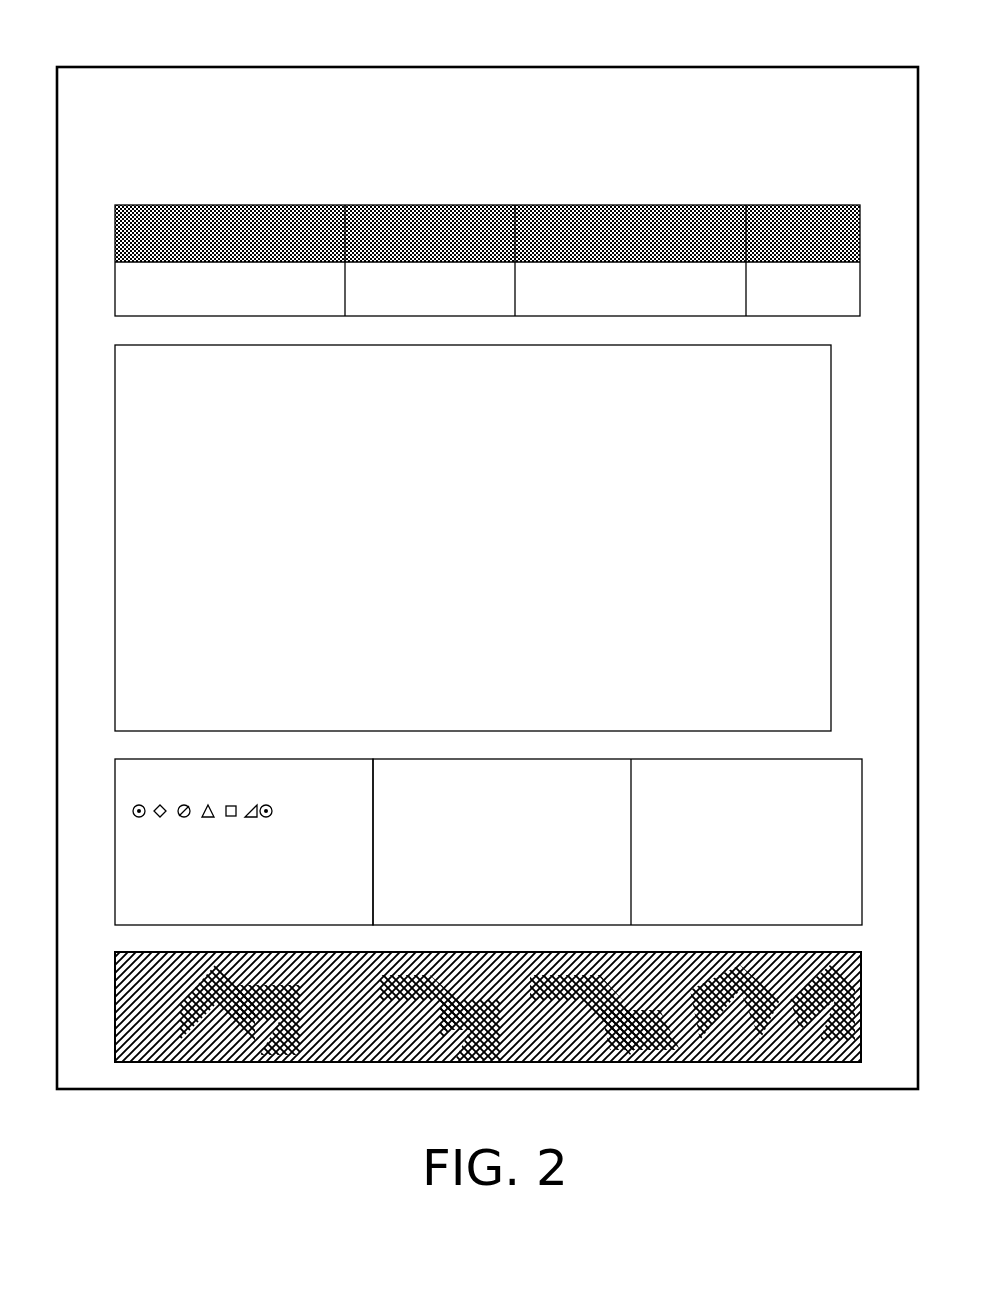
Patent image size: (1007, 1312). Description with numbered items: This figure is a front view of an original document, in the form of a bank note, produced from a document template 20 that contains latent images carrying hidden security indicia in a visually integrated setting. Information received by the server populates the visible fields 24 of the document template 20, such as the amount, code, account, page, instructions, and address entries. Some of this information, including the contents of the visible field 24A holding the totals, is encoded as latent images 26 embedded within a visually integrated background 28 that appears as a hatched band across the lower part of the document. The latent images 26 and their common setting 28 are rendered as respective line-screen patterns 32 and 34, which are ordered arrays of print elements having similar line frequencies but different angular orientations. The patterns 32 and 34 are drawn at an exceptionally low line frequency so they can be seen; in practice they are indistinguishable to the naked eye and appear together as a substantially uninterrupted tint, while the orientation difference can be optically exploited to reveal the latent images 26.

The document template 20 is at (133, 64).
The fields 24 is at (267, 320).
The visible field 24A is at (238, 754).
The latent images 26 is at (230, 988).
The visually integrated background 28 is at (130, 1010).
The line-screen pattern 32 is at (197, 982).
The line-screen pattern 34 is at (160, 1040).